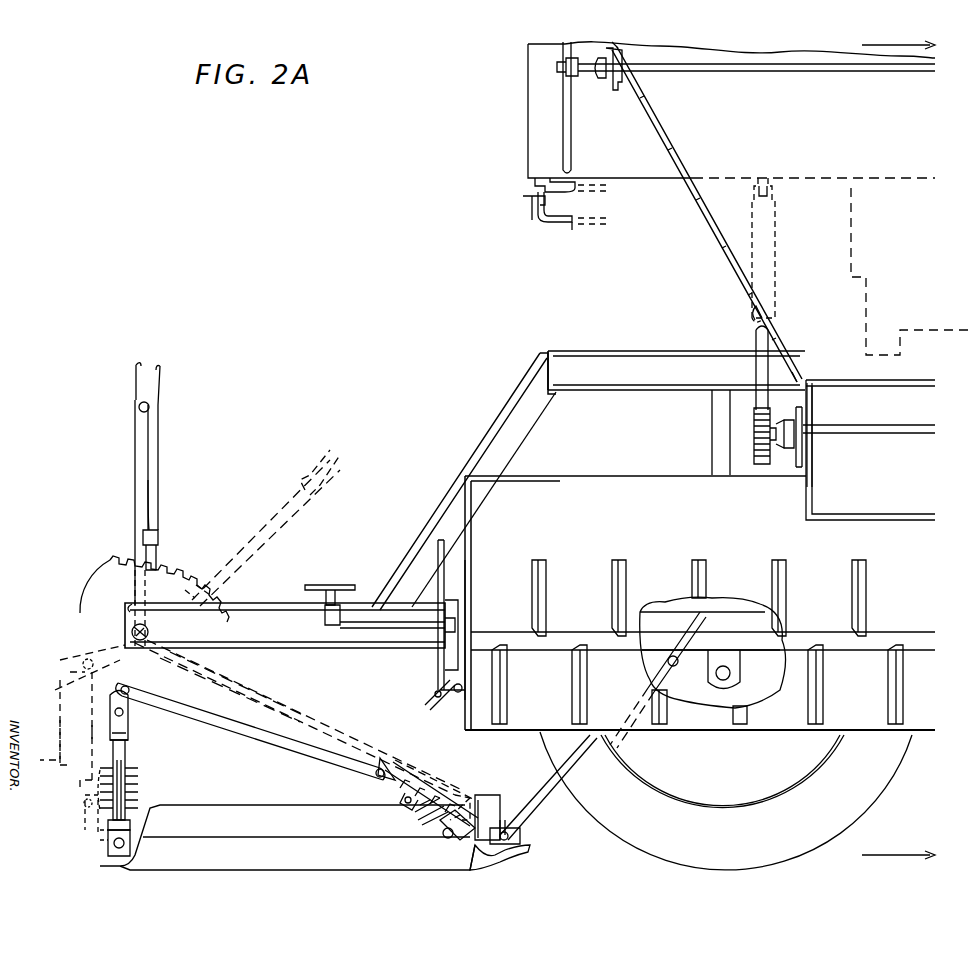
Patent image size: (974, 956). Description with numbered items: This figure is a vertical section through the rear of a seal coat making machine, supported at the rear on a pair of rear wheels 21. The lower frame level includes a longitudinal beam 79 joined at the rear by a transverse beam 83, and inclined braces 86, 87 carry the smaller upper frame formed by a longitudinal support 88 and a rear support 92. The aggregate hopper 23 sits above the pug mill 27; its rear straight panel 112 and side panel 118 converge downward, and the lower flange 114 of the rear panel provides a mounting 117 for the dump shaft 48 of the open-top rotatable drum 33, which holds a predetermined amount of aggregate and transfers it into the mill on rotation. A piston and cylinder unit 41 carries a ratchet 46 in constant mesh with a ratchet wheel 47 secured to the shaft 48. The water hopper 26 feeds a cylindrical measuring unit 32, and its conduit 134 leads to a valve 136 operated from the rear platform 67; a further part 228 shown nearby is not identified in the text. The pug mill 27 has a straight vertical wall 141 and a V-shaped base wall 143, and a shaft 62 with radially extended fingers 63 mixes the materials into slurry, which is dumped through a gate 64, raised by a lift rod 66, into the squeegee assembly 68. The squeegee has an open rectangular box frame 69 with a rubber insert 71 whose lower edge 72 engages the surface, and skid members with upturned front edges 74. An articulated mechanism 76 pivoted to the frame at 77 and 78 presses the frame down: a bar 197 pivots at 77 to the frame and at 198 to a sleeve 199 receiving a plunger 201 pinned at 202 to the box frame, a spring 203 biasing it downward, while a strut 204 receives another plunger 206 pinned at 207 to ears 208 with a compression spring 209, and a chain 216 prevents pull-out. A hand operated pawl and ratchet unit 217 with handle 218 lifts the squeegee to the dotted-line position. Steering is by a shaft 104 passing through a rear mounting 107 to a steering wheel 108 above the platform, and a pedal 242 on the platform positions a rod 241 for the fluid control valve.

The rear wheels 21 is at (632, 838).
The aggregate hopper 23 is at (718, 224).
The water hopper 26 is at (657, 160).
The pug mill 27 is at (660, 490).
The cylindrical measuring unit 32 is at (851, 280).
The rotatable drum 33 is at (842, 388).
The piston and cylinder unit 41 is at (778, 268).
The ratchet 46 is at (758, 368).
The ratchet wheel 47 is at (758, 468).
The shaft 48 is at (890, 438).
The shaft 62 is at (517, 625).
The fingers 63 is at (612, 565).
The gate 64 is at (430, 706).
The lift rod 66 is at (437, 662).
The rear platform 67 is at (272, 602).
The squeegee assembly 68 is at (292, 728).
The box frame 69 is at (255, 818).
The rubber insert 71 is at (224, 850).
The lower edge 72 is at (110, 866).
The upturned front edges 74 is at (528, 852).
The articulated mechanism 76 is at (155, 754).
The pivot connection 77 is at (148, 638).
The pivot points 78 is at (708, 610).
The longitudinal beam 79 is at (735, 622).
The rear transverse beam 83 is at (125, 612).
The inclined braces 86 is at (715, 415).
The inclined braces 87 is at (506, 423).
The longitudinal support 88 is at (636, 352).
The rear support 92 is at (550, 352).
The shaft 104 is at (700, 70).
The rear mounting 107 is at (604, 80).
The steering wheel 108 is at (563, 112).
The rear straight panel 112 is at (740, 278).
The lower flange 114 is at (802, 400).
The mounting 117 is at (785, 455).
The side panel 118 is at (855, 134).
The conduit 134 is at (572, 183).
The valve 136 is at (540, 225).
The vertical wall 141 is at (480, 535).
The base wall 143 is at (575, 492).
The bar 197 is at (70, 650).
The pivot connection 198 is at (62, 680).
The sleeve 199 is at (128, 730).
The plunger 201 is at (128, 778).
The pin 202 is at (105, 838).
The spring 203 is at (140, 796).
The strut 204 is at (232, 735).
The plunger 206 is at (380, 826).
The pin 207 is at (448, 842).
The ears 208 is at (482, 812).
The compression spring 209 is at (406, 830).
The chain 216 is at (412, 783).
The pawl and ratchet unit 217 is at (178, 460).
The handle 218 is at (134, 468).
The bracket 228 is at (562, 226).
The rod 241 is at (382, 630).
The pedal 242 is at (332, 584).